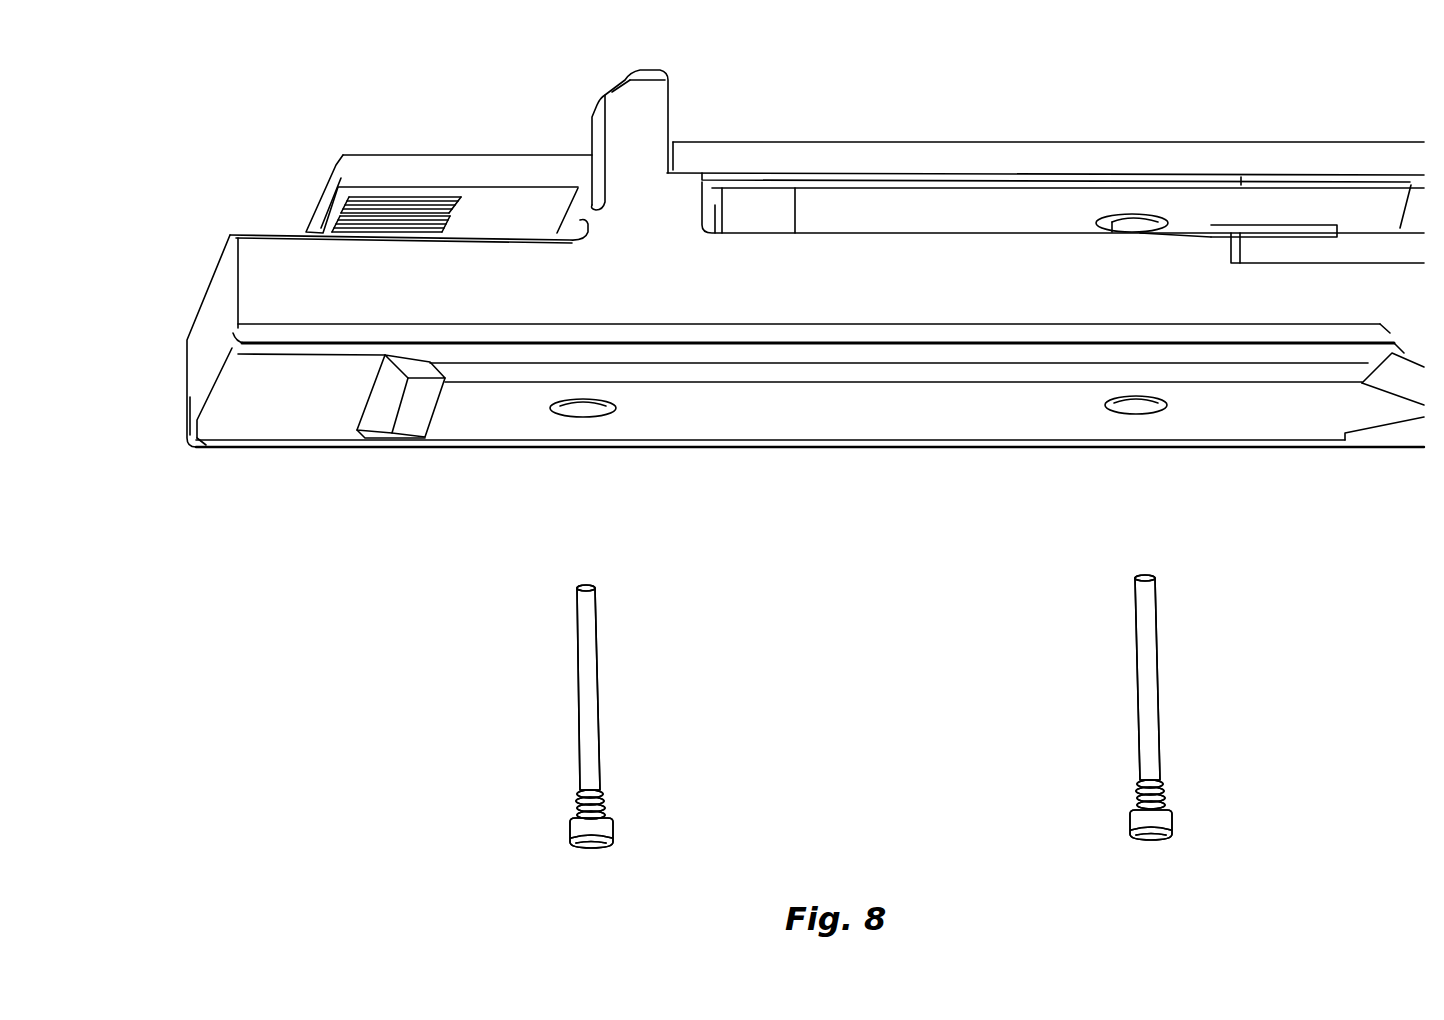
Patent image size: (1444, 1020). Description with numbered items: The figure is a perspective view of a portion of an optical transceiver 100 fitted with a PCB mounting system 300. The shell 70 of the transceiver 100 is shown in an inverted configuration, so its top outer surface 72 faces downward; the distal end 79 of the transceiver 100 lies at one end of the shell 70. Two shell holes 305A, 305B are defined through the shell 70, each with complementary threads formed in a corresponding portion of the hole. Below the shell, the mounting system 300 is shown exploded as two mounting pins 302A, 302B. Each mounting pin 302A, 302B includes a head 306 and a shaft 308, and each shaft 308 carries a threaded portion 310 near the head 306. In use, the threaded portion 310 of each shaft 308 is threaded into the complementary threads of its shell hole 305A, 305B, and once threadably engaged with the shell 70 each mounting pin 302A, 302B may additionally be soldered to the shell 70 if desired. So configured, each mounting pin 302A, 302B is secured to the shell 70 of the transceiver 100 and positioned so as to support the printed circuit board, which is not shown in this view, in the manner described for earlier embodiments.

The transceiver 100 is at (405, 98).
The shell 70 is at (275, 260).
The distal end 79 is at (203, 336).
The top outer surface 72 is at (818, 422).
The shell hole 305A is at (1137, 416).
The shell hole 305B is at (585, 417).
The PCB mounting system 300 is at (378, 543).
The mounting pin 302A is at (1165, 690).
The mounting pin 302B is at (568, 718).
The shaft 308 is at (598, 650).
The threaded portion 310 is at (606, 803).
The head 306 is at (595, 848).